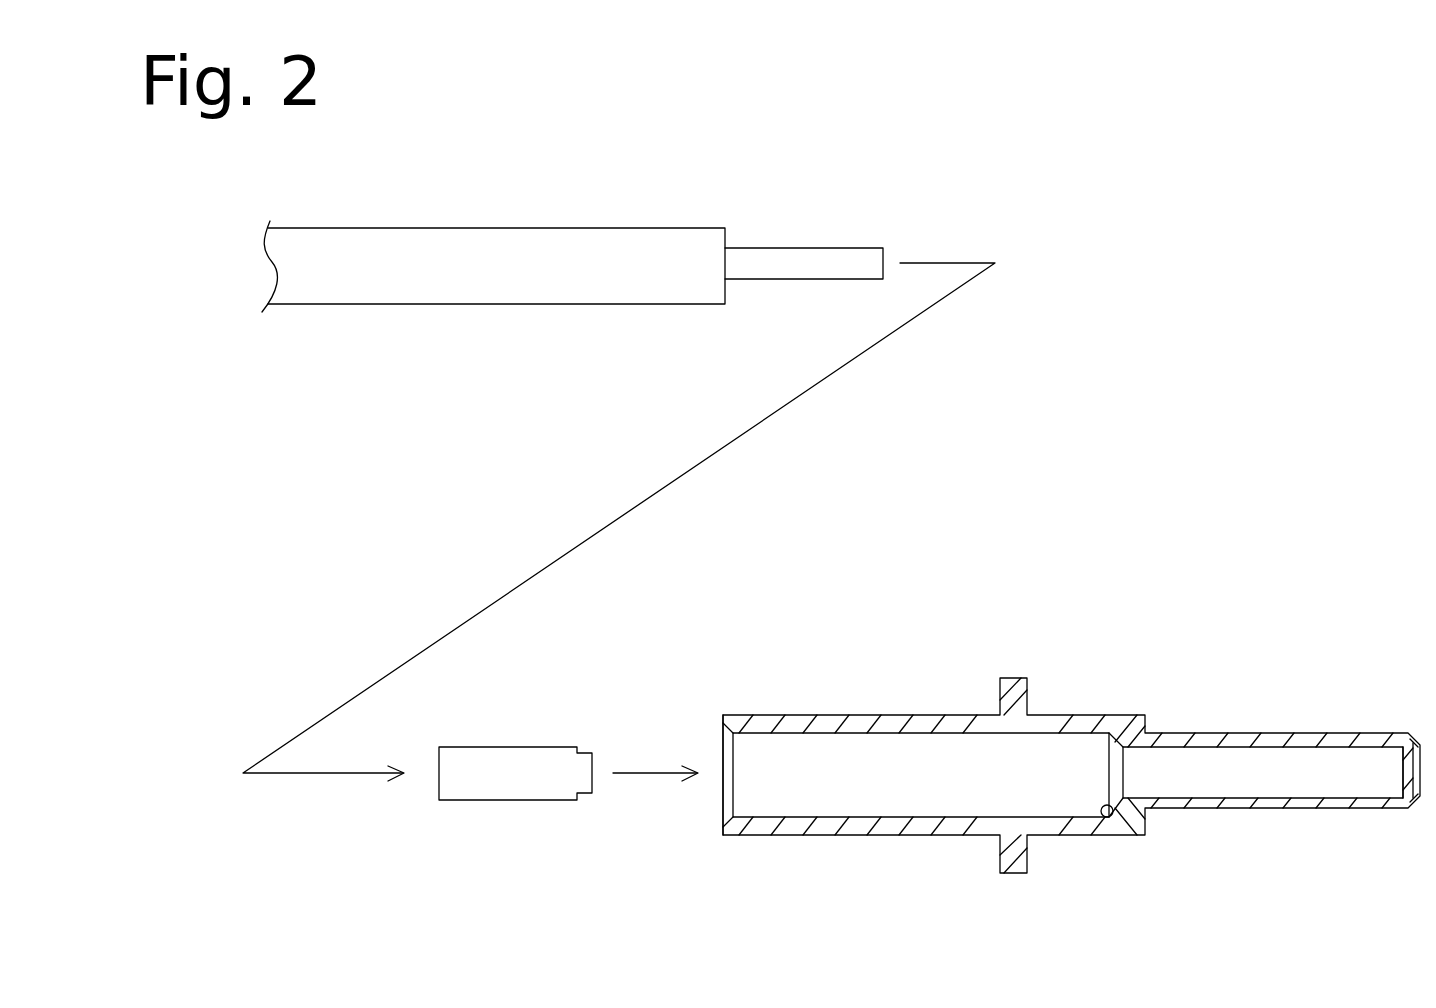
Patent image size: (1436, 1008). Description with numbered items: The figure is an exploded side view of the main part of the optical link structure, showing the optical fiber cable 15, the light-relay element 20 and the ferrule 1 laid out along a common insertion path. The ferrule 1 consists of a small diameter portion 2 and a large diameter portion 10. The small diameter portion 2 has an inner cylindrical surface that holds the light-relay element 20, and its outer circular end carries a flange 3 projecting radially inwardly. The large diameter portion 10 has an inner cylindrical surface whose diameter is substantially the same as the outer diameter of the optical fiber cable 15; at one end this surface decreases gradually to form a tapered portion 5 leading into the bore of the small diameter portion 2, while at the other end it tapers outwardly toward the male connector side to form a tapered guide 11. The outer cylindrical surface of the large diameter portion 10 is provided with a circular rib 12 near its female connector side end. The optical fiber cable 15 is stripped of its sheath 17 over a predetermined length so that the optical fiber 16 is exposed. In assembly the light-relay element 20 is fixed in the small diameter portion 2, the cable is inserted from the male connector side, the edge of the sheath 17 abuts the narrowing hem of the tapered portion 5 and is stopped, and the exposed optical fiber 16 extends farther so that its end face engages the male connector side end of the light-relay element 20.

The ferrule 1 is at (1043, 742).
The small diameter portion 2 is at (1233, 809).
The flange 3 is at (1400, 787).
The tapered portion 5 is at (1106, 820).
The large diameter portion 10 is at (875, 842).
The tapered guide 11 is at (721, 823).
The circular rib 12 is at (1030, 699).
The optical fiber cable 15 is at (572, 261).
The optical fiber 16 is at (783, 281).
The sheath 17 is at (627, 305).
The light-relay element 20 is at (496, 803).